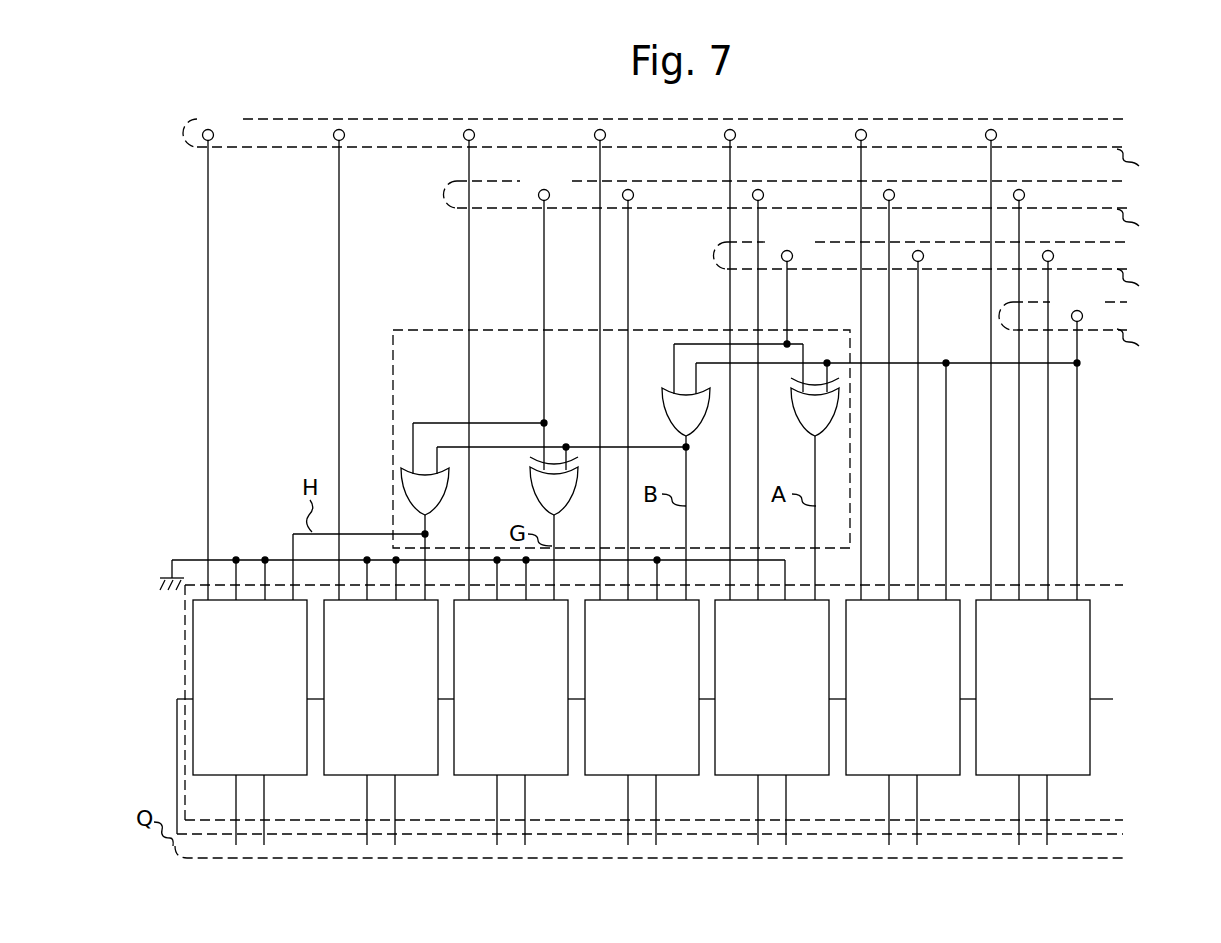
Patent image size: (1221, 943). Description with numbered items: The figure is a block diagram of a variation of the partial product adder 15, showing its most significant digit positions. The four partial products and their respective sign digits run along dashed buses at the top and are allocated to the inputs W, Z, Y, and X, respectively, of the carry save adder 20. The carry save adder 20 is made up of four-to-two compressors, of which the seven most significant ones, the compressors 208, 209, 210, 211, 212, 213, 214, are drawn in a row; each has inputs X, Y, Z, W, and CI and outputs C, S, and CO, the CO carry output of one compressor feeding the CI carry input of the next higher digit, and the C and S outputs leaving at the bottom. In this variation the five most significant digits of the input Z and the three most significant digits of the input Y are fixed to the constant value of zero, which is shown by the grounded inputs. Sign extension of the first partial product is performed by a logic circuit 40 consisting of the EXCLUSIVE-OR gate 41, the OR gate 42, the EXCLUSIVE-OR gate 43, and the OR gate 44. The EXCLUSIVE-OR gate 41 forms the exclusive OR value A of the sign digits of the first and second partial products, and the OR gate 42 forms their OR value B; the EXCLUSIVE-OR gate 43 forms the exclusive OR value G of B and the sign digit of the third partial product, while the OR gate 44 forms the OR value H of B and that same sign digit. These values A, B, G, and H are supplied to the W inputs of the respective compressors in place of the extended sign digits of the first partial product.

The partial product adder 15 is at (1220, 145).
The carry save adder 20 is at (1098, 582).
The logic circuit 40 is at (428, 328).
The EXCLUSIVE-OR gate 41 is at (807, 392).
The OR gate 42 is at (669, 394).
The EXCLUSIVE-OR gate 43 is at (535, 477).
The OR gate 44 is at (401, 478).
The 4:2 compressor 208 is at (1054, 777).
The 4:2 compressor 209 is at (924, 777).
The 4:2 compressor 210 is at (793, 777).
The 4:2 compressor 211 is at (663, 777).
The 4:2 compressor 212 is at (532, 777).
The 4:2 compressor 213 is at (402, 777).
The 4:2 compressor 214 is at (271, 777).